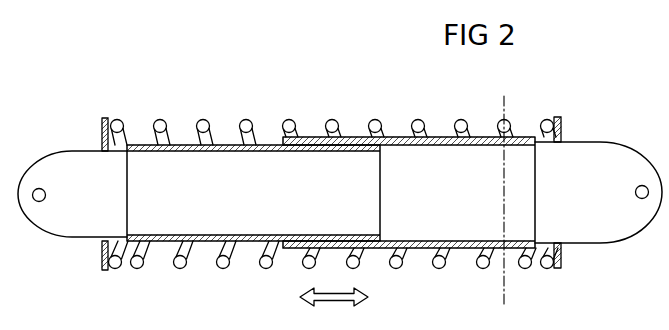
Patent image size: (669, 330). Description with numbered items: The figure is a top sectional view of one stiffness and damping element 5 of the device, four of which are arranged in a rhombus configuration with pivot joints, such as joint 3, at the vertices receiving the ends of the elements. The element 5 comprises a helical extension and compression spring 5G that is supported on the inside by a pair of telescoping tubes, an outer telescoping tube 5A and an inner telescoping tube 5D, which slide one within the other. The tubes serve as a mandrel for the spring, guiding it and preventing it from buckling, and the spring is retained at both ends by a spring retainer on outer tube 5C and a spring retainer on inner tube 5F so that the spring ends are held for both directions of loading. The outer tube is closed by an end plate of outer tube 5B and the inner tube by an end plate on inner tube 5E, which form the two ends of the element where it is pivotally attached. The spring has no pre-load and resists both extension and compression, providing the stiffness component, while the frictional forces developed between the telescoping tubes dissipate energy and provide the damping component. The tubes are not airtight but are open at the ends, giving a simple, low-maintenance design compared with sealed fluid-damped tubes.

The stiffness and damping element 5 is at (353, 96).
The outer telescoping tube 5A is at (477, 196).
The end plate of outer tube 5B is at (604, 224).
The spring retainer on outer tube 5C is at (561, 123).
The inner telescoping tube 5D is at (265, 196).
The end plate on inner tube 5E is at (51, 224).
The spring retainer on inner tube 5F is at (102, 131).
The helical extension and compression spring 5G is at (245, 122).
The joint # 3 is at (504, 307).